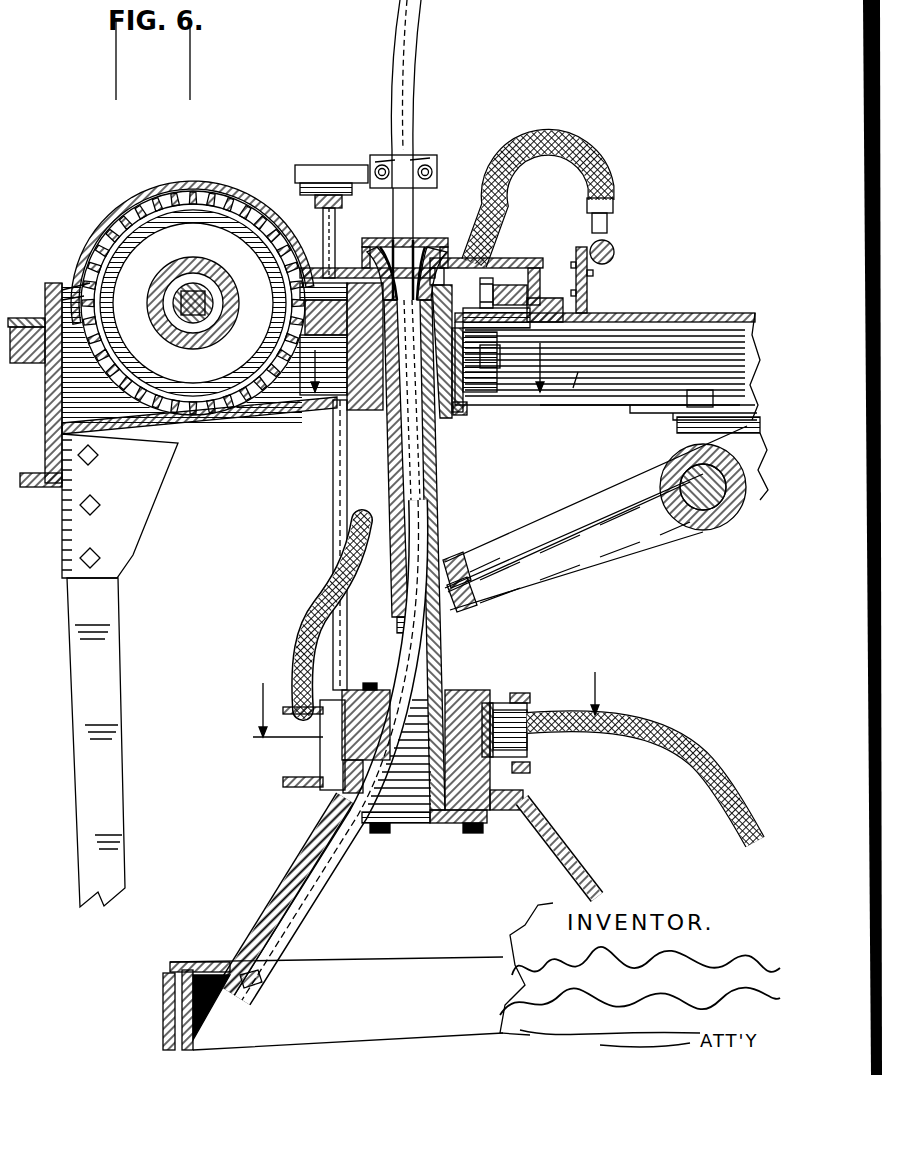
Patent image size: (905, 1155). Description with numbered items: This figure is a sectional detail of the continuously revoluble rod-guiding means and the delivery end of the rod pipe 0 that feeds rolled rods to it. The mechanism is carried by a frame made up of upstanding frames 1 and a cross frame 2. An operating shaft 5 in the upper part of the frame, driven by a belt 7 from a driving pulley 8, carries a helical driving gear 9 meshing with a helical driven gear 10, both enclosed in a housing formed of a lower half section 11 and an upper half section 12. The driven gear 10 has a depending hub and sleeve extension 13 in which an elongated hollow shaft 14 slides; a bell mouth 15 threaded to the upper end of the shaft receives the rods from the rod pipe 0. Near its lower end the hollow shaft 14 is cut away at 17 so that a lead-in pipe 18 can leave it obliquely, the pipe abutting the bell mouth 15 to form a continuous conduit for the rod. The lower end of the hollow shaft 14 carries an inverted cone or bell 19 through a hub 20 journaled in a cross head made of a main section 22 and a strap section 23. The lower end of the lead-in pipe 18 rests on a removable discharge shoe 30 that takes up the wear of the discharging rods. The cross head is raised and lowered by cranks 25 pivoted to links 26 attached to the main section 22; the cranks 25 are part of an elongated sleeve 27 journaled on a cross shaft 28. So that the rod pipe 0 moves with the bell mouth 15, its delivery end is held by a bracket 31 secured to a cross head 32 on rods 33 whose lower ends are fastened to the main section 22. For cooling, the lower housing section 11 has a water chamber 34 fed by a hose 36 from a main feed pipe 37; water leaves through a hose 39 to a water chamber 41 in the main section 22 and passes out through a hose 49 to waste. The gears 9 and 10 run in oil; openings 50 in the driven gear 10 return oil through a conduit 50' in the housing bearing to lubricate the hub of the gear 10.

The rod pipe 0 is at (420, 57).
The upstanding frame 1 is at (120, 670).
The upper cross frame 2 is at (611, 406).
The operating shaft 5 is at (162, 287).
The belt 7 is at (437, 367).
The driving pulley 8 is at (422, 708).
The helical driving gear 9 is at (193, 303).
The helical driven gear 10 is at (498, 258).
The lower half section of housing 11 is at (288, 420).
The upper half section of housing 12 is at (165, 185).
The hub and sleeve extension 13 is at (465, 414).
The hollow shaft 14 is at (446, 517).
The bell mouth 15 is at (412, 247).
The slot of hollow shaft 17 is at (400, 643).
The lead-in pipe 18 is at (283, 910).
The bell 19 is at (585, 870).
The hub of bell 20 is at (460, 815).
The main section of cross head 22 is at (285, 753).
The strap section of cross head 23 is at (548, 770).
The crank 25 is at (668, 540).
The link 26 is at (452, 617).
The elongated sleeve 27 is at (655, 468).
The cross shaft 28 is at (703, 532).
The removable discharge shoe 30 is at (255, 1003).
The bracket 31 is at (420, 158).
The cross head 32 is at (318, 182).
The vertically disposed rod 33 is at (343, 487).
The water chamber 34 is at (487, 388).
The hose 36 is at (598, 130).
The main feed pipe 37 is at (615, 249).
The hose 39 is at (322, 616).
The water chamber 41 is at (320, 748).
The hose 49 is at (668, 718).
The openings 50 is at (356, 244).
The conduit 50' is at (302, 442).